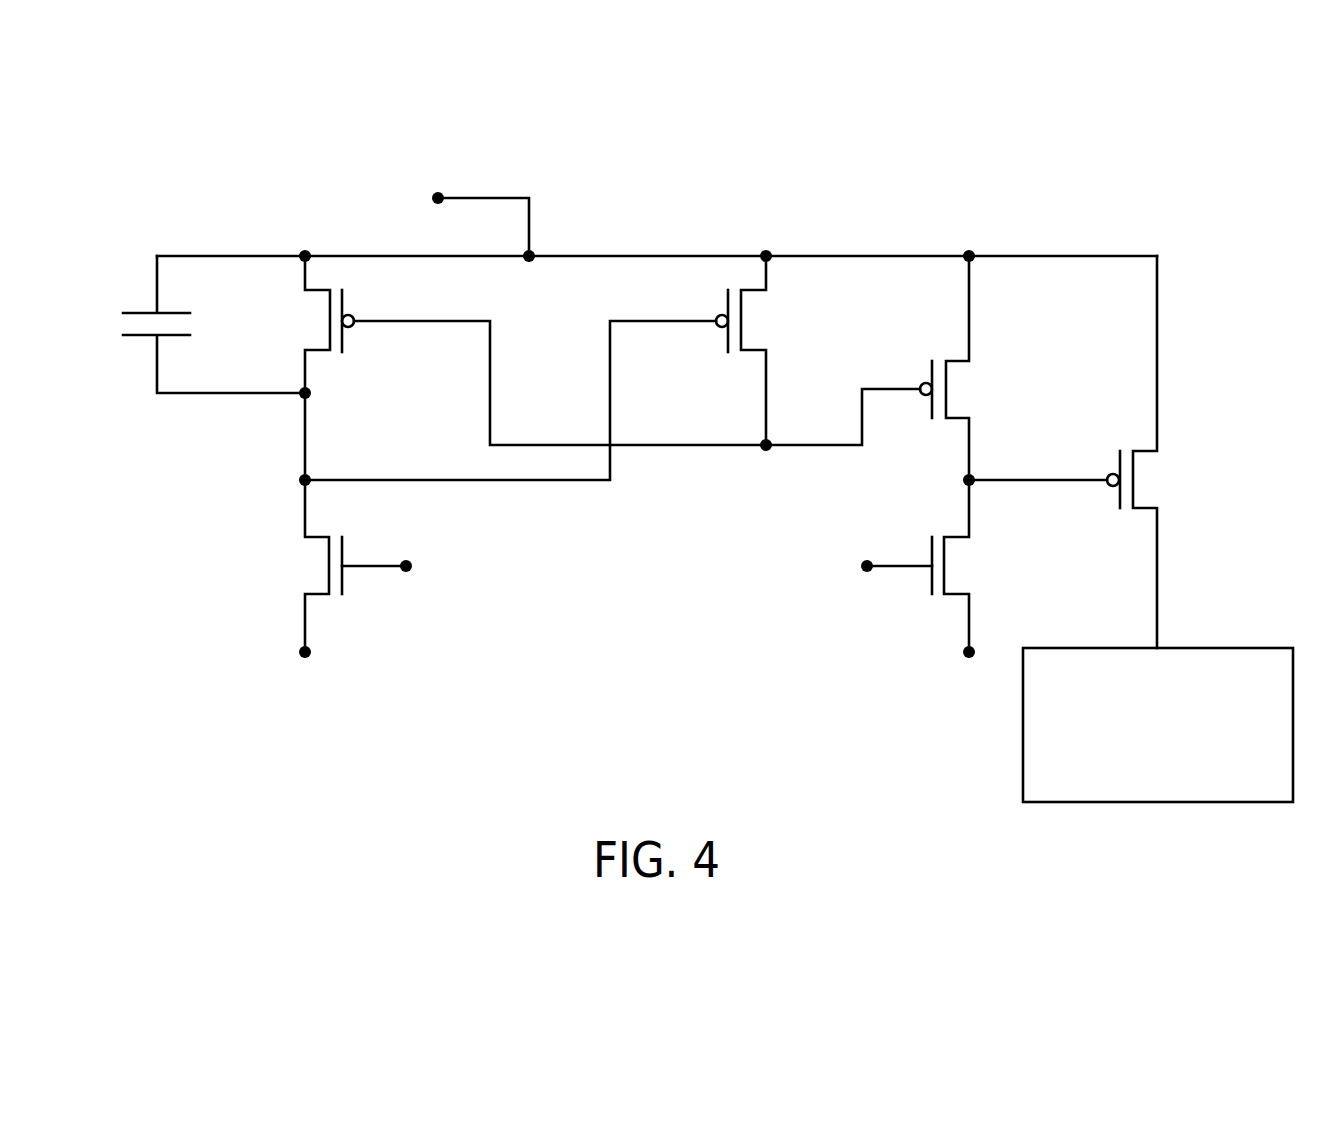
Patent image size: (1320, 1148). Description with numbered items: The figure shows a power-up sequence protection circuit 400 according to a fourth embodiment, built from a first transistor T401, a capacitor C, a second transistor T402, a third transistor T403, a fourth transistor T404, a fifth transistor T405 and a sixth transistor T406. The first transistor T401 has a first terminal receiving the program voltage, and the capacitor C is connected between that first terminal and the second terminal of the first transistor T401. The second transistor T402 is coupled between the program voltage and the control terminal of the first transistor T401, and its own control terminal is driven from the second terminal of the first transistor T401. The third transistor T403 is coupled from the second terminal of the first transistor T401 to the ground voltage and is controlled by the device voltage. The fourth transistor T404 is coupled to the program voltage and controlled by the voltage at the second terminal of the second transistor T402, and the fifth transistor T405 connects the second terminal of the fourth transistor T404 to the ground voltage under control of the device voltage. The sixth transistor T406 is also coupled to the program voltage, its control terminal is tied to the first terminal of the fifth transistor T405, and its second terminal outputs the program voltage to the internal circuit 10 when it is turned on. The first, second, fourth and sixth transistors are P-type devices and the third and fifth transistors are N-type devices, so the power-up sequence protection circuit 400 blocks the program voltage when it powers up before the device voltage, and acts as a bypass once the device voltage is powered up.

The power-up sequence protection circuit 400 is at (1055, 165).
The internal circuit 10 is at (1264, 743).
The first transistor T401 is at (300, 324).
The second transistor T402 is at (769, 350).
The third transistor T403 is at (344, 547).
The fourth transistor T404 is at (973, 368).
The fifth transistor T405 is at (929, 590).
The sixth transistor T406 is at (1115, 452).
The capacitor C is at (201, 324).